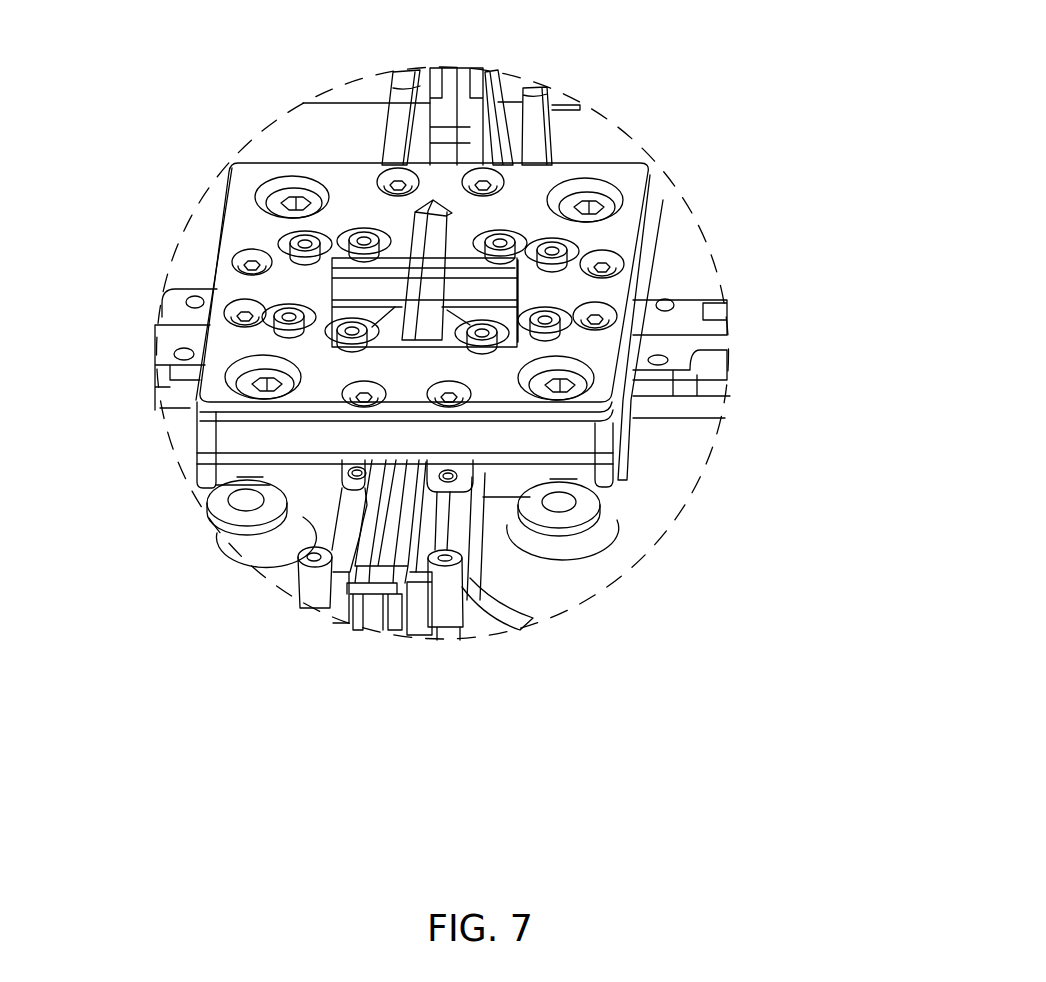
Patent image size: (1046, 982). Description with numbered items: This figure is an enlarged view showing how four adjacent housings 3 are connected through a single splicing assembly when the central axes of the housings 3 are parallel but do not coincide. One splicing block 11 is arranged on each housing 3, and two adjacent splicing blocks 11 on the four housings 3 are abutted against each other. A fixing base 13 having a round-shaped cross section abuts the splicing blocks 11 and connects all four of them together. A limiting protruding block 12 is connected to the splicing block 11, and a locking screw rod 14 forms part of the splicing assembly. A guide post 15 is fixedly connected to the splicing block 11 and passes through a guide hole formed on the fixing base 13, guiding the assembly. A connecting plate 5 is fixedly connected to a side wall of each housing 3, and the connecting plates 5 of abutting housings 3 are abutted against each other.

The housing 3 is at (333, 130).
The connecting plate 5 is at (468, 103).
The splicing block 11 is at (613, 480).
The limiting protruding block 12 is at (480, 292).
The fixing base 13 is at (620, 223).
The locking screw rod 14 is at (230, 379).
The guide post 15 is at (292, 240).